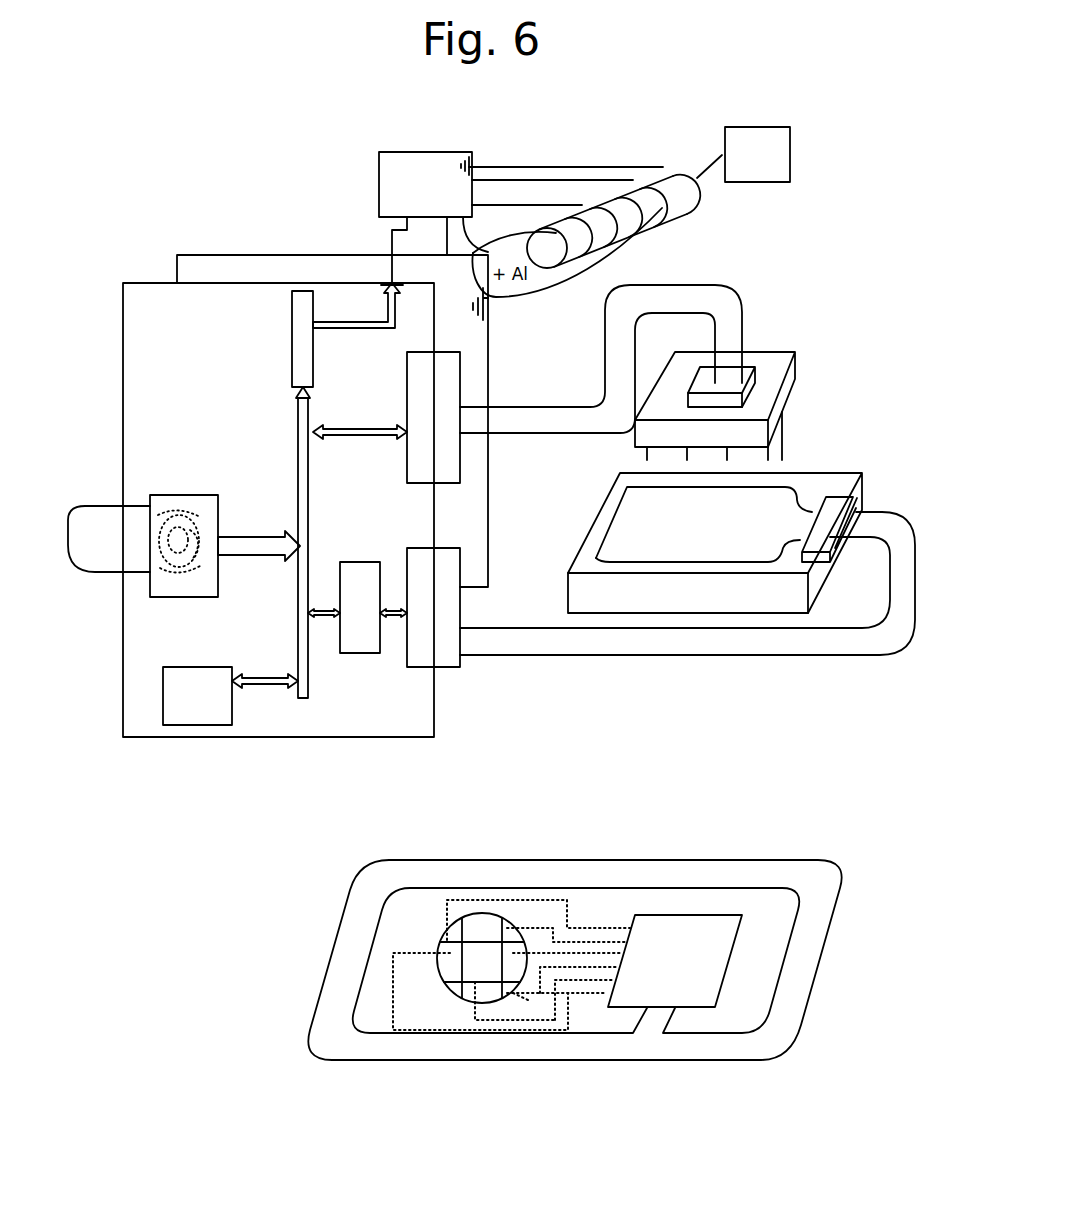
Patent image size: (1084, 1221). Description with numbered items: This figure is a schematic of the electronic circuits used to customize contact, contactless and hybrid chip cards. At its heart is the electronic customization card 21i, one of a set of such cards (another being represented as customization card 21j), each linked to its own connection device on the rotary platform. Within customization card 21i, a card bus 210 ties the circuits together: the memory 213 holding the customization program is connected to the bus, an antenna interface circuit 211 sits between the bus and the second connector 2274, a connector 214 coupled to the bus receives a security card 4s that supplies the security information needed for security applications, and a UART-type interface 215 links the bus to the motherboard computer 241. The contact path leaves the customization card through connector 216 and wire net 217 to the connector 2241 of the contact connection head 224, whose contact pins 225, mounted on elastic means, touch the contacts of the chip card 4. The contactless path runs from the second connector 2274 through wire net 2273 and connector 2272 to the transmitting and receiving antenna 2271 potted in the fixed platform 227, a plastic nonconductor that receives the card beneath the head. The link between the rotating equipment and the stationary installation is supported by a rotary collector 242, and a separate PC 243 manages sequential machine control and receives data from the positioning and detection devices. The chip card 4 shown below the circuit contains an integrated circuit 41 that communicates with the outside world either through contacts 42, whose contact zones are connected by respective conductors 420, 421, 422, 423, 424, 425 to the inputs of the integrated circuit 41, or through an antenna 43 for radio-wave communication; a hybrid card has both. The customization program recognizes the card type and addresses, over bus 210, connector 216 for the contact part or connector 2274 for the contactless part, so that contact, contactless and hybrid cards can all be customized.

The electronic customization card 21i is at (230, 790).
The personalization station 21j is at (217, 204).
The UART-type interface 215 is at (296, 290).
The motherboard computer 241 is at (425, 184).
The rotary collector 242 is at (695, 193).
The PC 243 is at (743, 154).
The connector 216 is at (447, 378).
The wire net 217 is at (702, 298).
The connector 2241 is at (745, 384).
The contact pins 225 is at (782, 422).
The contact connection head 224 is at (640, 433).
The fixed platform 227 is at (635, 600).
The transmitting and receiving antenna 2271 is at (782, 498).
The connector 2272 is at (855, 500).
The wire net 2273 is at (848, 645).
The second connector 2274 is at (447, 655).
The connector 214 is at (205, 508).
The security card 4s is at (110, 558).
The card bus 210 is at (310, 507).
The antenna interface circuit 211 is at (353, 640).
The memory 213 is at (227, 708).
The chip card 4 is at (352, 1113).
The antenna 43 is at (782, 955).
The integrated circuit 41 is at (728, 928).
The contacts 42 is at (473, 967).
The conductor 425 is at (475, 900).
The conductor 424 is at (543, 928).
The conductor 423 is at (595, 953).
The conductor 420 is at (420, 1033).
The conductor 421 is at (487, 1022).
The conductor 422 is at (527, 993).